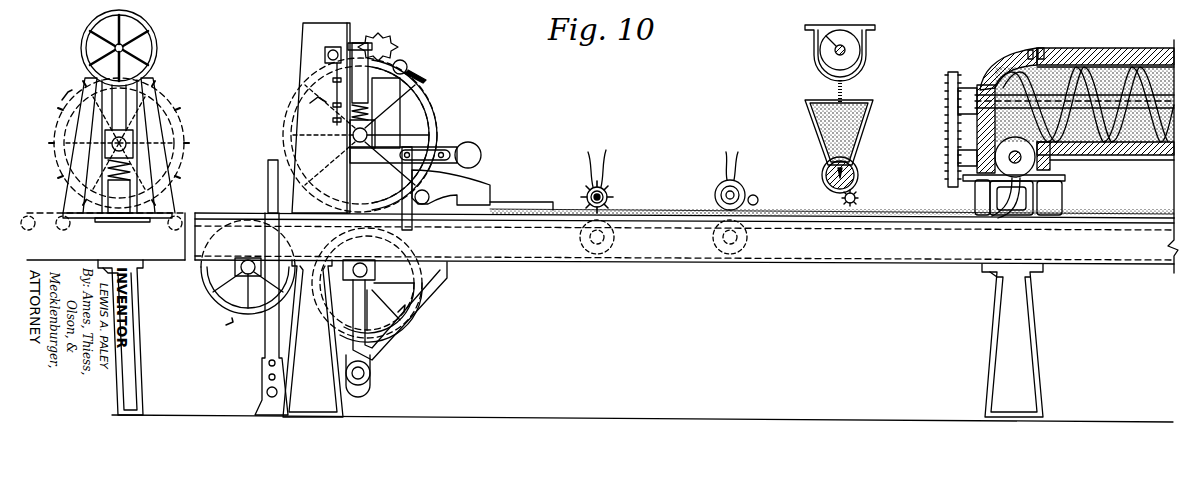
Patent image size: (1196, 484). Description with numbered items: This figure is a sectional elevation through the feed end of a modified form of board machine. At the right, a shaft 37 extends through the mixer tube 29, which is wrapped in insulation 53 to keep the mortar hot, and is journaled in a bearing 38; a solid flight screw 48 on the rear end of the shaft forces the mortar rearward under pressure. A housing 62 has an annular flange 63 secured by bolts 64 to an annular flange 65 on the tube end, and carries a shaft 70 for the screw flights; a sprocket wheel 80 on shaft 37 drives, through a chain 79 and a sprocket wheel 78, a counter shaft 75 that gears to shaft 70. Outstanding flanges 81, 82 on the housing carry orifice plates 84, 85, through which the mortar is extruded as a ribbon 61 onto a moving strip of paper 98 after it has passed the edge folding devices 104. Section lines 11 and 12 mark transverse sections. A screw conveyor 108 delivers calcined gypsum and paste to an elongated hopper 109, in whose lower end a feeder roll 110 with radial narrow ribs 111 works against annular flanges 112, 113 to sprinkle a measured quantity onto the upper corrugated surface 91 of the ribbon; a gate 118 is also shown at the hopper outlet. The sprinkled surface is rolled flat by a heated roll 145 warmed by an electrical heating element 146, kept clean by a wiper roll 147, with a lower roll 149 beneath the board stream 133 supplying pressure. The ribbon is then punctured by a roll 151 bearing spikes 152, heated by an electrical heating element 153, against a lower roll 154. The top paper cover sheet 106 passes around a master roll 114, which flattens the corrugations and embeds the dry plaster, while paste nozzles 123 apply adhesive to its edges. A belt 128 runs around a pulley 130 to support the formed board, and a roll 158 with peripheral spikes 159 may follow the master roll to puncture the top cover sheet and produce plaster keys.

The section line 11- 11 is at (92, 5).
The section line 12- 12 is at (752, 125).
The mixer tube 29 is at (1090, 90).
The shaft 37 is at (1136, 152).
The bearing 38 is at (981, 84).
The solid flight screw 48 is at (1045, 85).
The insulation 53 is at (1138, 52).
The ribbon 61 is at (1015, 198).
The housing 62 is at (996, 70).
The annular flange 63 is at (1031, 50).
The bolts 64 is at (1030, 55).
The annular flange 65 is at (1042, 47).
The shaft 70 is at (1036, 160).
The counter shaft 75 is at (948, 160).
The sprocket wheel 78 is at (948, 178).
The chain 79 is at (948, 136).
The sprocket wheel 80 is at (948, 107).
The flange 81 is at (1063, 180).
The flange 82 is at (966, 182).
The orifice plate 84 is at (1057, 198).
The orifice plate 85 is at (975, 197).
The corrugated surface 91 is at (857, 209).
The strip of paper 98 is at (1146, 218).
The edge folding devices 104 is at (525, 201).
The top paper cover sheet 106 is at (263, 10).
The screw conveyor 108 is at (818, 56).
The elongated hopper 109 is at (872, 106).
The feeder roll 110 is at (858, 178).
The radial narrow ribs 111 is at (826, 162).
The annular flange 112 is at (825, 176).
The annular flange 113 is at (860, 186).
The gate 118 is at (826, 193).
The master roll 114 is at (283, 132).
The paste nozzles 123 is at (420, 76).
The belt 128 is at (217, 290).
The pulley 130 is at (202, 274).
The board stream 133 is at (223, 212).
The heated roll 145 is at (716, 193).
The electrical heating element 146 is at (724, 182).
The wiper roll 147 is at (754, 194).
The lower roll 149 is at (714, 258).
The roll 151 is at (612, 195).
The spikes 152 is at (608, 186).
The electrical heating element 153 is at (586, 192).
The lower roll 154 is at (609, 258).
The roll 158 is at (178, 133).
The peripheral spikes 159 is at (164, 97).